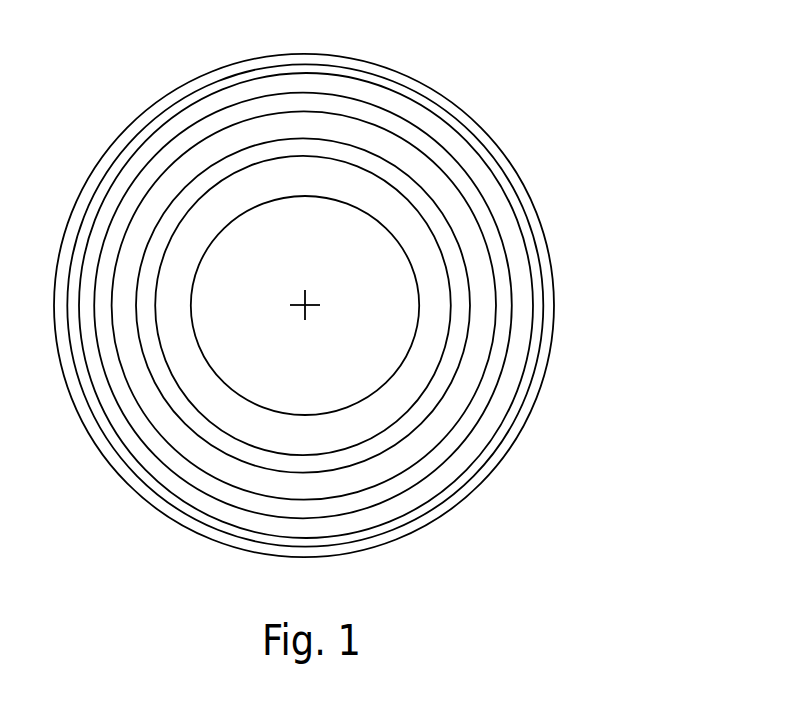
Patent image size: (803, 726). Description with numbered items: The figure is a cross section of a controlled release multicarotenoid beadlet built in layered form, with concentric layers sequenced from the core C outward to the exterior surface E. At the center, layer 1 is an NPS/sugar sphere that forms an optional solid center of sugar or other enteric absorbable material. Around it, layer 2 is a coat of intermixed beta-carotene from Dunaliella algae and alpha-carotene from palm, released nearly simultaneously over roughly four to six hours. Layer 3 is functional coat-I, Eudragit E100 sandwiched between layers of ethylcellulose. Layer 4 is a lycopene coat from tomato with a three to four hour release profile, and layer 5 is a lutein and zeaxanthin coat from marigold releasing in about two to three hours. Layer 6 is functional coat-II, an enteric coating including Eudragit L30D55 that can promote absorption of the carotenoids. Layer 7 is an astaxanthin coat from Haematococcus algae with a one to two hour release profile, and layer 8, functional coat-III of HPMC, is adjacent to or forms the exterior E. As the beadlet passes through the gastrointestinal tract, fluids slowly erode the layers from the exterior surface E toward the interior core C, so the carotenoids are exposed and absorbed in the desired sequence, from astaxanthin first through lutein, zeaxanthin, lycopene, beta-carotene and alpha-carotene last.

The NPS/sugar sphere layer 1 is at (397, 382).
The beta-carotene and alpha-carotene coat 2 is at (442, 337).
The functional coat-I 3 is at (471, 286).
The lycopene coat 4 is at (493, 238).
The lutein and zeaxanthin coat 5 is at (495, 196).
The functional coat-II 6 is at (482, 154).
The astaxanthin coat 7 is at (464, 118).
The functional coat-III 8 is at (430, 80).
The core C is at (304, 303).
The exterior surface E is at (150, 107).